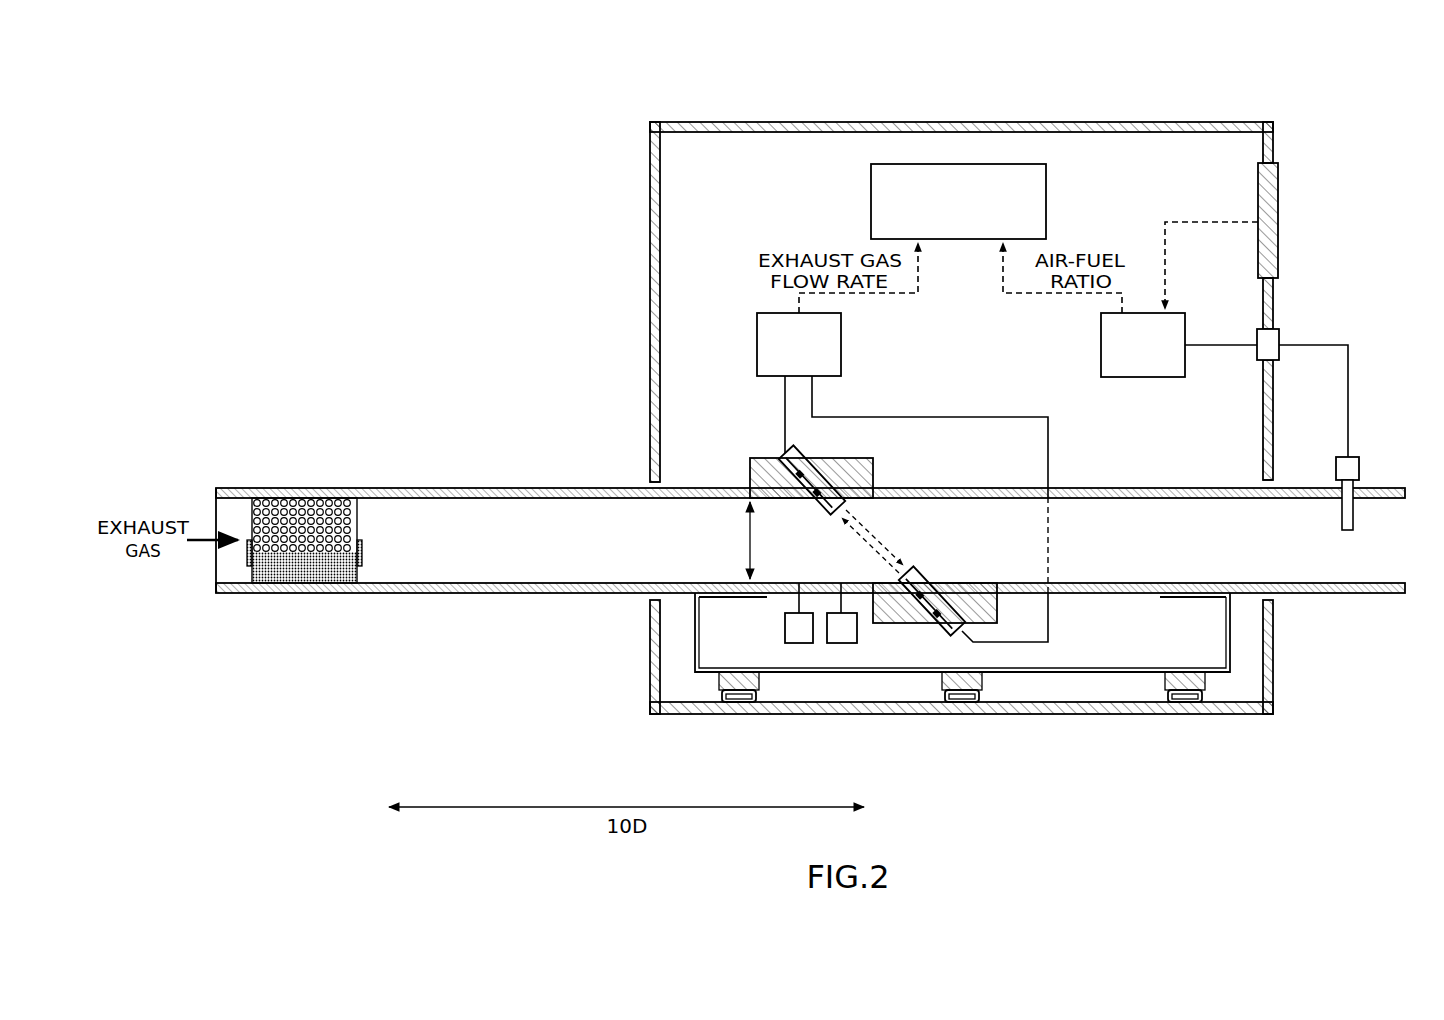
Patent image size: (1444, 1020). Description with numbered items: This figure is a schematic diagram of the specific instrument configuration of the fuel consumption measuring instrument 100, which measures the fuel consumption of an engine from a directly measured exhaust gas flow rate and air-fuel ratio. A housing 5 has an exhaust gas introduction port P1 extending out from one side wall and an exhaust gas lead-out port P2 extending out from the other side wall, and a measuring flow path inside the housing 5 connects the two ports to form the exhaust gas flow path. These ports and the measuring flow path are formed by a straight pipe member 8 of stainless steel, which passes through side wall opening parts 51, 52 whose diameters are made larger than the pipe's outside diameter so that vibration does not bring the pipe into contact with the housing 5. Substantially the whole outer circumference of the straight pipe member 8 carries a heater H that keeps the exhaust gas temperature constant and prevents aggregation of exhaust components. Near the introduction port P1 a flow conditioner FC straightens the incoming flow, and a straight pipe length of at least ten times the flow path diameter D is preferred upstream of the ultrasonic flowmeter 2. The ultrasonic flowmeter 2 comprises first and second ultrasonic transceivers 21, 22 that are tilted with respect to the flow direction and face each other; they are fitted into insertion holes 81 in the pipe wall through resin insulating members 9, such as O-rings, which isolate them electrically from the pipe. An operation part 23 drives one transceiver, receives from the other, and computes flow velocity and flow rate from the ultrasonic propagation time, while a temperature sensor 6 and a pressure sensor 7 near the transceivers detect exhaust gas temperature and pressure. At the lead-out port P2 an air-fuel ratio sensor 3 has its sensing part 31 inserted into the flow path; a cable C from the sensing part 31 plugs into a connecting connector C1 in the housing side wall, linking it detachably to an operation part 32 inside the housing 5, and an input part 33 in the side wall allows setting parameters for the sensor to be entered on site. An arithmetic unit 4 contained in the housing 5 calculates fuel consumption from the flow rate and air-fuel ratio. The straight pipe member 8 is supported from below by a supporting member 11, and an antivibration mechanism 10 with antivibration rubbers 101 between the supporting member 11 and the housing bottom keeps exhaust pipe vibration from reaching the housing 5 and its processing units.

The fuel consumption measuring instrument 100 is at (558, 165).
The housing 5 is at (1128, 122).
The side wall opening part 51 is at (643, 483).
The side wall opening part 52 is at (1277, 483).
The input part 33 is at (1280, 192).
The arithmetic unit 4 is at (1046, 200).
The ultrasonic flowmeter 2 is at (869, 487).
The operation part 23 is at (757, 345).
The first ultrasonic transceiver 21 is at (828, 513).
The second ultrasonic transceiver 22 is at (928, 582).
The insulating member 9 is at (806, 464).
The insertion hole 81 is at (775, 480).
The straight pipe member 8 is at (510, 490).
The heater H is at (393, 490).
The exhaust gas introduction port P1 is at (236, 490).
The exhaust gas lead-out port P2 is at (1365, 595).
The flow conditioner FC is at (360, 518).
The diameter of exhaust gas flow path D is at (734, 540).
The supporting member 11 is at (895, 672).
The temperature sensor 6 is at (785, 627).
The pressure sensor 7 is at (857, 633).
The antivibration mechanism 10 is at (909, 707).
The antivibration rubber 101 is at (760, 682).
The air-fuel ratio sensor 3 is at (1263, 397).
The operation part 32 is at (1140, 377).
The cable C is at (1350, 385).
The connecting connector C1 is at (1280, 342).
The sensing part 31 is at (1360, 468).